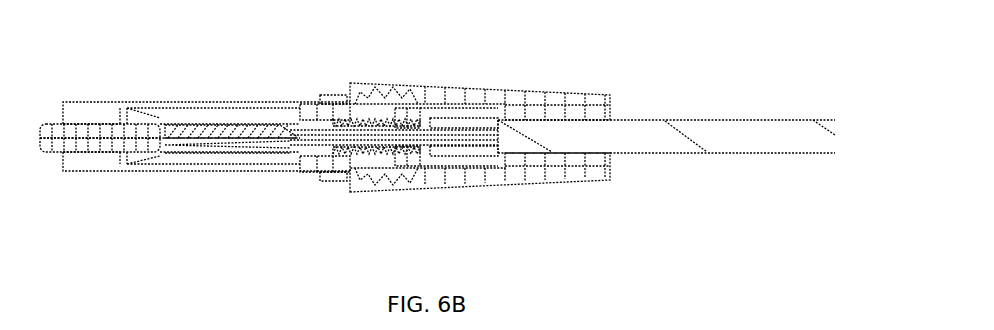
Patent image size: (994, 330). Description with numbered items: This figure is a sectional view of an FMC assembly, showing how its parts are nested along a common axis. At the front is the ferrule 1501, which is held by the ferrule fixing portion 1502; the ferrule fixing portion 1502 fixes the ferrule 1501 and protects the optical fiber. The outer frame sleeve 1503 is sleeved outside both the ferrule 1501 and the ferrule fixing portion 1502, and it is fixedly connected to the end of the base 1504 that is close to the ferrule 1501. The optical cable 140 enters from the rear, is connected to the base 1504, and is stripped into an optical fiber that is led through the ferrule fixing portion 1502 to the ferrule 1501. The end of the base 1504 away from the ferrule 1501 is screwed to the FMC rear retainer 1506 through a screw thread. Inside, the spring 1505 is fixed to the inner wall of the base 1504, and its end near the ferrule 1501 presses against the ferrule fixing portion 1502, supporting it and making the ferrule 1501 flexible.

The ferrule 1501 is at (56, 126).
The ferrule fixing portion 1502 is at (197, 130).
The outer frame sleeve 1503 is at (143, 106).
The base 1504 is at (349, 112).
The spring 1505 is at (405, 122).
The FMC rear retainer 1506 is at (500, 99).
The optical cable 140 is at (654, 130).